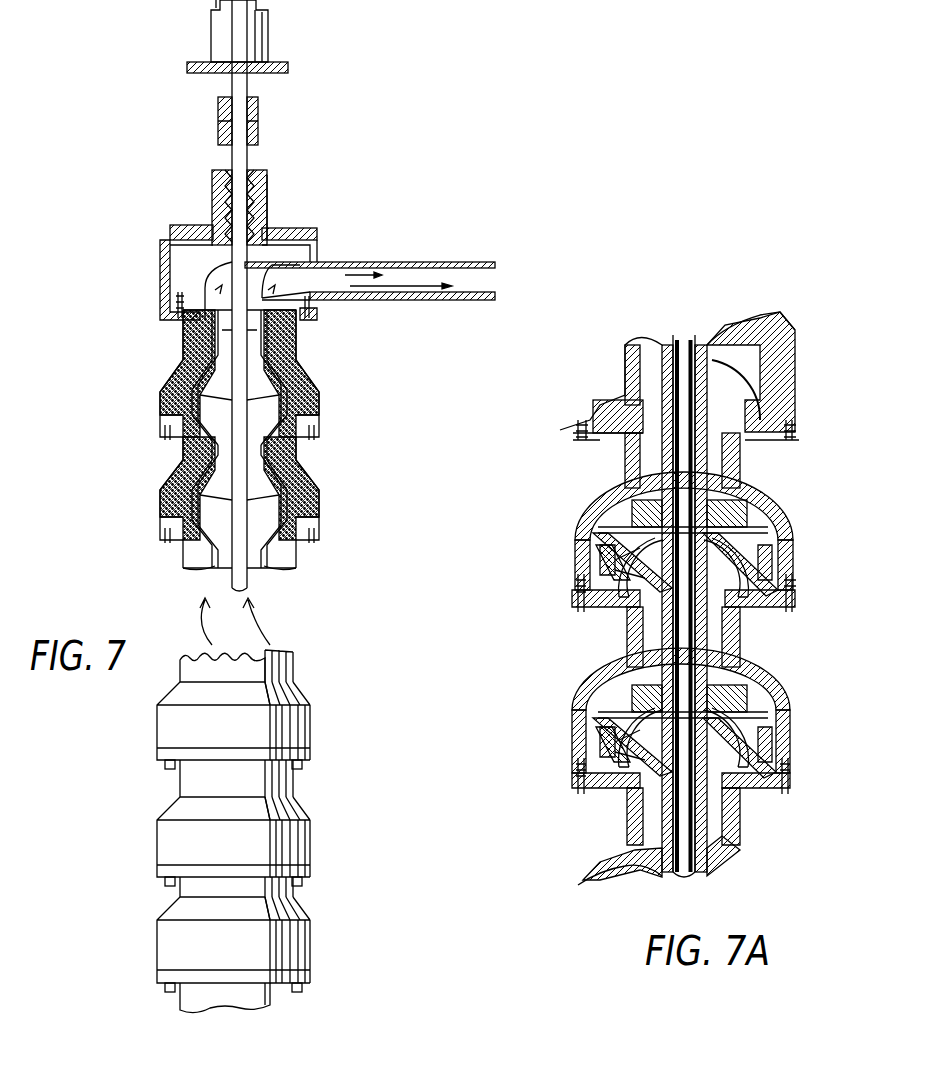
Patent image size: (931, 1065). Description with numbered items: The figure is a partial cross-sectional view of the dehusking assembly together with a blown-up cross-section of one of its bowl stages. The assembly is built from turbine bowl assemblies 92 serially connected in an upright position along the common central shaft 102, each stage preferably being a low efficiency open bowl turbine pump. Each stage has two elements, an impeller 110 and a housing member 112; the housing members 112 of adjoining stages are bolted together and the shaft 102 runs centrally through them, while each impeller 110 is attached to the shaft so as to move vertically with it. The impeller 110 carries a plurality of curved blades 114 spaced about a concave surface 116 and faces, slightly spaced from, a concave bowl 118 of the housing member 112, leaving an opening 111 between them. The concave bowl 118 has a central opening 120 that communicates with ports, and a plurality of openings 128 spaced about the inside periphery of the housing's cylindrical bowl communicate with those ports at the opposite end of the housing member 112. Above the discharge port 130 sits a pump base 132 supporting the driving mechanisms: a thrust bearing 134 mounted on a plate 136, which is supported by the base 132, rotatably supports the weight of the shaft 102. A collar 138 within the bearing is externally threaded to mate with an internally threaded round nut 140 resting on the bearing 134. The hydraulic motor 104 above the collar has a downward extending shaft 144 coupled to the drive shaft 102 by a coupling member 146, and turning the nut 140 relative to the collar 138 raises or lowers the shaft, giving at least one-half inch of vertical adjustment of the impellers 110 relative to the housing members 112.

In FIG. 7, the turbine bowl assemblies 92 is at (135, 865).
In FIG. 7, the central shaft 102 is at (232, 158).
In FIG. 7A, the central shaft 102 is at (697, 877).
In FIG. 7, the hydraulic motor 104 is at (268, 33).
In FIG. 7, the impeller 110 is at (270, 385).
In FIG. 7A, the impeller 110 is at (615, 545).
In FIG. 7A, the opening 111 is at (620, 576).
In FIG. 7, the housing member 112 is at (297, 487).
In FIG. 7A, the curved blades 114 is at (612, 562).
In FIG. 7A, the concave surface 116 is at (622, 610).
In FIG. 7A, the concave bowl 118 is at (622, 800).
In FIG. 7A, the central opening 120 is at (650, 650).
In FIG. 7A, the openings 128 is at (602, 506).
In FIG. 7, the discharge port 130 is at (468, 262).
In FIG. 7, the pump base 132 is at (320, 248).
In FIG. 7, the thrust bearing 134 is at (197, 227).
In FIG. 7, the plate 136 is at (300, 236).
In FIG. 7, the collar 138 is at (258, 168).
In FIG. 7, the round nut 140 is at (262, 205).
In FIG. 7, the shaft 144 is at (232, 82).
In FIG. 7, the coupling member 146 is at (260, 126).